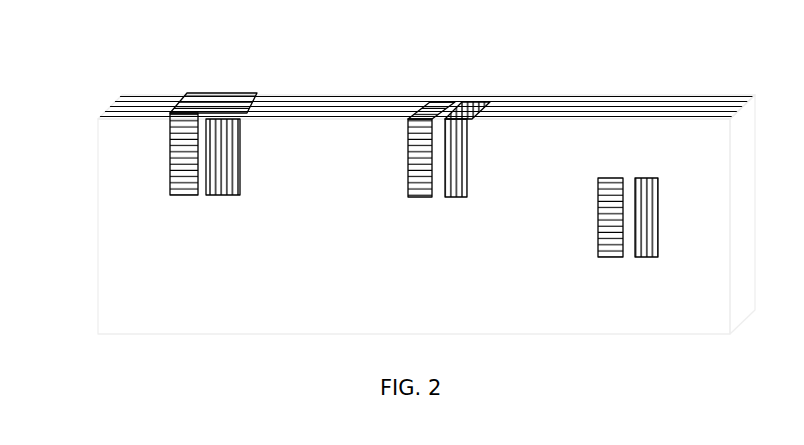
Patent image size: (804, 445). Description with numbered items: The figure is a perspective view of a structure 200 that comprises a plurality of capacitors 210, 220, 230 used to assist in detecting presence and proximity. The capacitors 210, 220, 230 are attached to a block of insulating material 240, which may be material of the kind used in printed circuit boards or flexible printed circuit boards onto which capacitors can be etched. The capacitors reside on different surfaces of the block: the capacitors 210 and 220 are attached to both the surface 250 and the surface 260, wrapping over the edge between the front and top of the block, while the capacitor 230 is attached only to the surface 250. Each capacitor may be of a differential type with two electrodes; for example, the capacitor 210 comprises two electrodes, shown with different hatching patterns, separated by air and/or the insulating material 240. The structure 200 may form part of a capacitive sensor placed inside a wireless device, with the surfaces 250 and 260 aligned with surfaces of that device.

The structure 200 is at (377, 210).
The capacitor 210 is at (228, 88).
The capacitor 220 is at (473, 87).
The capacitor 230 is at (642, 162).
The block of insulating material 240 is at (377, 213).
The surface 250 is at (515, 290).
The surface 260 is at (558, 107).